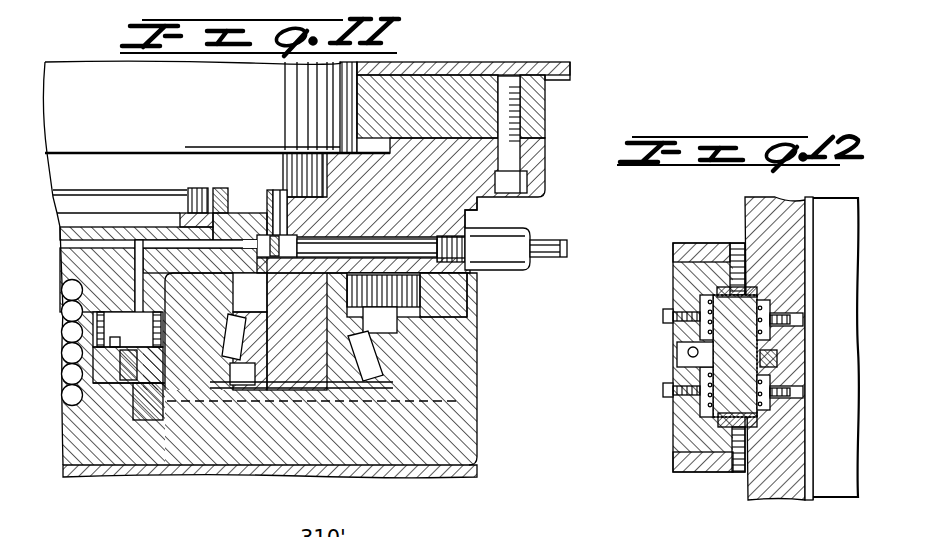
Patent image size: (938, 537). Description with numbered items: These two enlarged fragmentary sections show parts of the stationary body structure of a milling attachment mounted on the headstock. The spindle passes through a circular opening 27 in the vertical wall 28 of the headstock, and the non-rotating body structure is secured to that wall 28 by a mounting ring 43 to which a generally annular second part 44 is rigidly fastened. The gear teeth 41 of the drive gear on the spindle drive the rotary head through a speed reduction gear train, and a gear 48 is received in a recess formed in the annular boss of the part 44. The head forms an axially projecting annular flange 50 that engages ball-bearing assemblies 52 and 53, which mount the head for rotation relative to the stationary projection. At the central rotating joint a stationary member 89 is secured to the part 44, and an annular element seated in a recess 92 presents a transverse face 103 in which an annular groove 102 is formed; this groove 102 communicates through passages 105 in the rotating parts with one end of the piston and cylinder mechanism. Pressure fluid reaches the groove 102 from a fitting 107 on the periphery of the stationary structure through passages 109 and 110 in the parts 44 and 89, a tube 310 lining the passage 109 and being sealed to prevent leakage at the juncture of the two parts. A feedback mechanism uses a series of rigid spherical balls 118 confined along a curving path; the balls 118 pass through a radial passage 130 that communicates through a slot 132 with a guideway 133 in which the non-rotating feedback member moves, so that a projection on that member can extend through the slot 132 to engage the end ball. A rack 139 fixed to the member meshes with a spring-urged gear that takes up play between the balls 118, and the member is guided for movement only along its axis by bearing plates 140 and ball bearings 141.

In FIG. 11, the circular opening 27 is at (340, 75).
In FIG. 11, the vertical wall 28 is at (572, 72).
In FIG. 11, the gear teeth 41 is at (250, 238).
In FIG. 11, the mounting ring 43 is at (547, 113).
In FIG. 11, the second part 44 is at (547, 165).
In FIG. 11, the gear 48 is at (455, 303).
In FIG. 11, the annular flange 50 is at (478, 365).
In FIG. 11, the ball-bearing assembly 52 is at (365, 385).
In FIG. 11, the ball-bearing assembly 53 is at (230, 385).
In FIG. 11, the member 89 is at (73, 262).
In FIG. 11, the recess 92 is at (108, 323).
In FIG. 11, the annular groove 102 is at (140, 323).
In FIG. 11, the transverse face 103 is at (105, 347).
In FIG. 11, the passages 105 is at (478, 430).
In FIG. 11, the fitting 107 is at (512, 272).
In FIG. 11, the passage 109 is at (383, 245).
In FIG. 11, the passage 110 is at (206, 242).
In FIG. 11, the spherical balls 118 is at (70, 384).
In FIG. 11, the tube 310 is at (425, 245).
In FIG. 12, the radial passage 130 is at (688, 352).
In FIG. 12, the slot 132 is at (710, 352).
In FIG. 12, the guideway 133 is at (730, 412).
In FIG. 12, the rack 139 is at (777, 356).
In FIG. 12, the bearing plates 140 is at (700, 302).
In FIG. 12, the ball bearings 141 is at (685, 282).